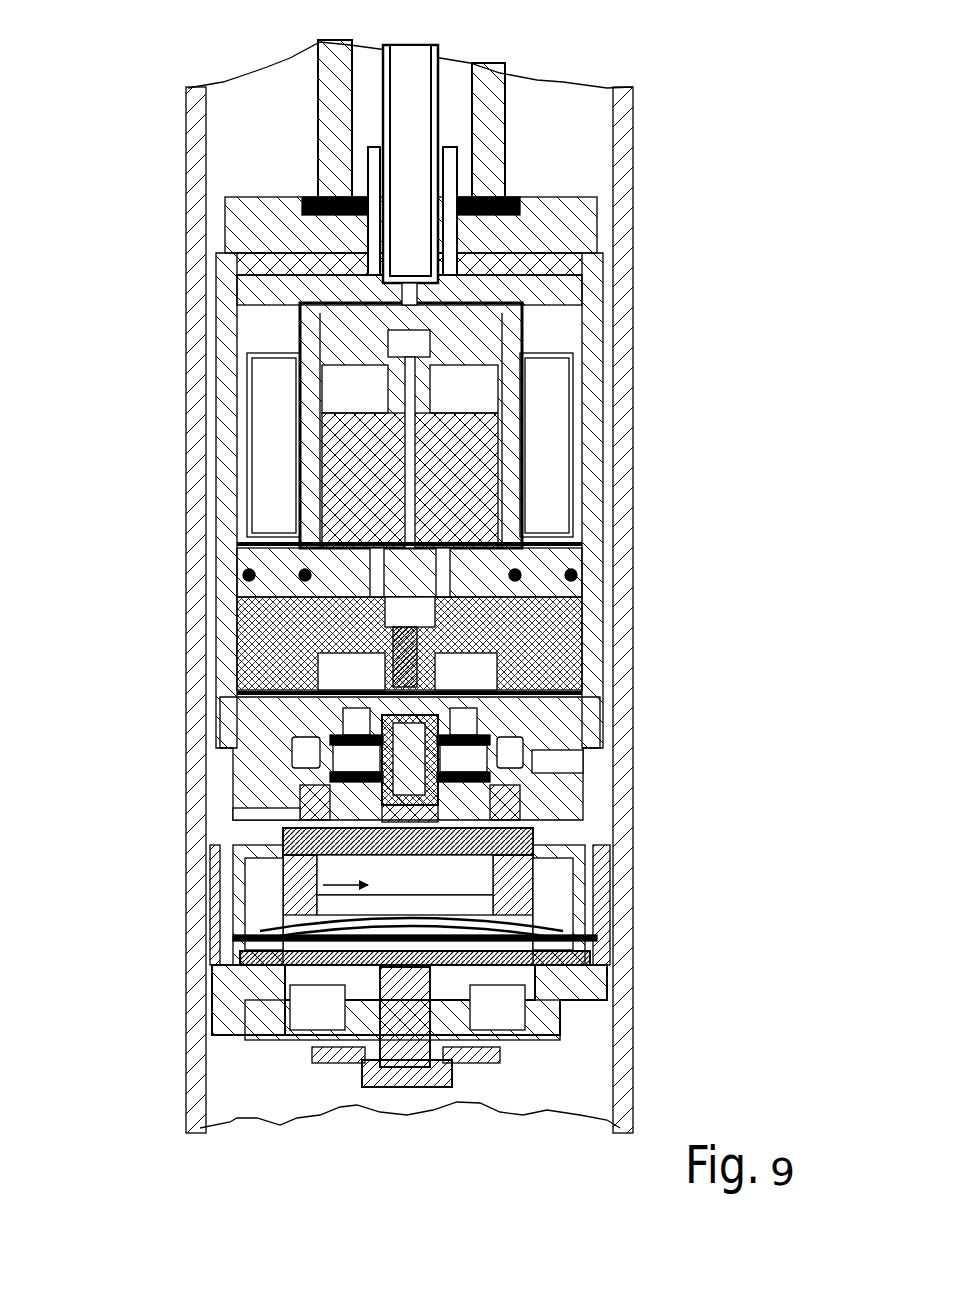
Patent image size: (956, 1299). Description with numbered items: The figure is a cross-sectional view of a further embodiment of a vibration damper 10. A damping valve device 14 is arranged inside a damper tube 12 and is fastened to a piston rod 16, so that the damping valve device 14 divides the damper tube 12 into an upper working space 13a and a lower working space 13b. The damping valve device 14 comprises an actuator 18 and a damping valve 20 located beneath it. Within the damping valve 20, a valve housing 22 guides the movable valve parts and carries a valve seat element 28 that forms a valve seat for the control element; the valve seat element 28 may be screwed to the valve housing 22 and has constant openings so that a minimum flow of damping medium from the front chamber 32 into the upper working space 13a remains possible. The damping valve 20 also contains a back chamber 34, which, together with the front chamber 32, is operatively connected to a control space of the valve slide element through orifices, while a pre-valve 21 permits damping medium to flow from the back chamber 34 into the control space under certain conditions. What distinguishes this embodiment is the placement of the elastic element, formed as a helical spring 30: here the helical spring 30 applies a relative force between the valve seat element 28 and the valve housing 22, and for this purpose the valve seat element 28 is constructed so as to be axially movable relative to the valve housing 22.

The vibration damper 10 is at (438, 569).
The damper tube 12 is at (622, 210).
The upper working space 13a is at (253, 128).
The lower working space 13b is at (253, 1080).
The damping valve device 14 is at (557, 178).
The piston rod 16 is at (485, 97).
The actuator 18 is at (657, 415).
The damping valve 20 is at (606, 730).
The pre-valve 21 is at (448, 673).
The valve housing 22 is at (557, 790).
The valve seat element 28 is at (290, 858).
The helical spring 30 is at (213, 958).
The front chamber 32 is at (238, 892).
The back chamber 34 is at (280, 665).